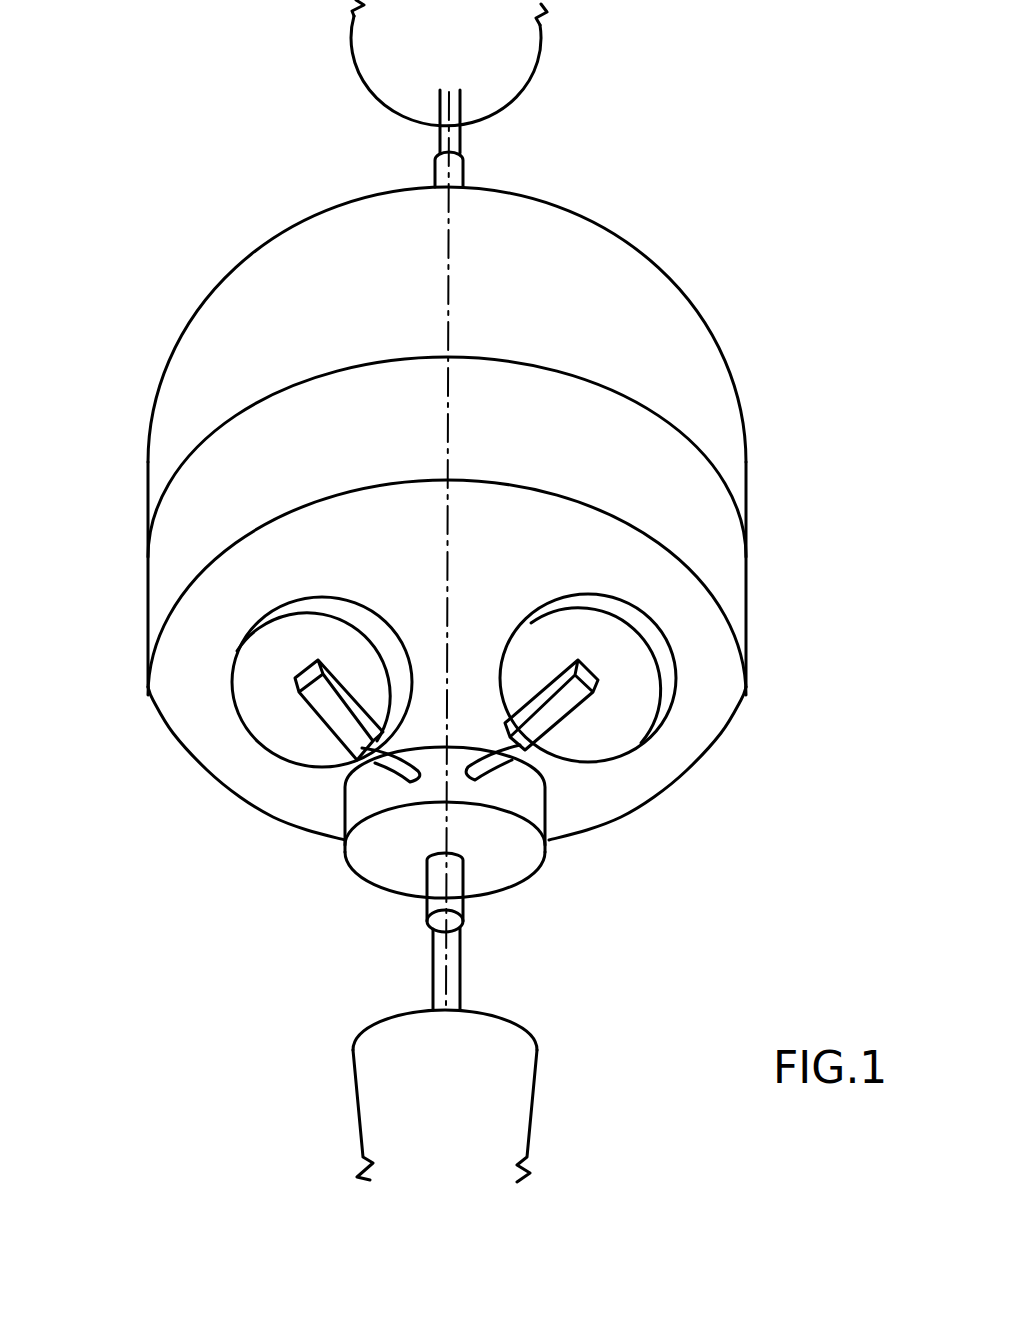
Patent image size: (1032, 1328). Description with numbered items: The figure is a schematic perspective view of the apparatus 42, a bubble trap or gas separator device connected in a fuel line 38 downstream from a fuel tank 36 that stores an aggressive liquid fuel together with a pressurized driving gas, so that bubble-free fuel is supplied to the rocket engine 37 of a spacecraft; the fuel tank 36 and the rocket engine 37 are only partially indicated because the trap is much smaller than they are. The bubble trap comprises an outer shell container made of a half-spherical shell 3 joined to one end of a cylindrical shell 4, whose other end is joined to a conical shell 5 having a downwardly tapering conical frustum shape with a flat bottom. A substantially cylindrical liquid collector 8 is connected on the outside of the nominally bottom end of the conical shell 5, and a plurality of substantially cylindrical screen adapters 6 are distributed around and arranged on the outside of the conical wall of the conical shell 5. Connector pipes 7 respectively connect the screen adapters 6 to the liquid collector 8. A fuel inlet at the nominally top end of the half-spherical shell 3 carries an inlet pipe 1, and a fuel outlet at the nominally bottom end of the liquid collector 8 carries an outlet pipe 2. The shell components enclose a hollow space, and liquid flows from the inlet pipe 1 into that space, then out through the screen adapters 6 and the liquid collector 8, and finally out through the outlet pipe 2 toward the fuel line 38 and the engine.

The inlet pipe 1 is at (452, 172).
The outlet pipe 2 is at (430, 902).
The half-spherical shell 3 is at (667, 313).
The cylindrical shell 4 is at (698, 500).
The conical shell 5 is at (240, 578).
The screen adapters 6 is at (640, 663).
The connector pipes 7 is at (545, 752).
The liquid collector 8 is at (397, 860).
The fuel tank 36 is at (543, 38).
The rocket engine 37 is at (527, 1030).
The fuel line 38 is at (462, 118).
The apparatus 42 is at (742, 149).